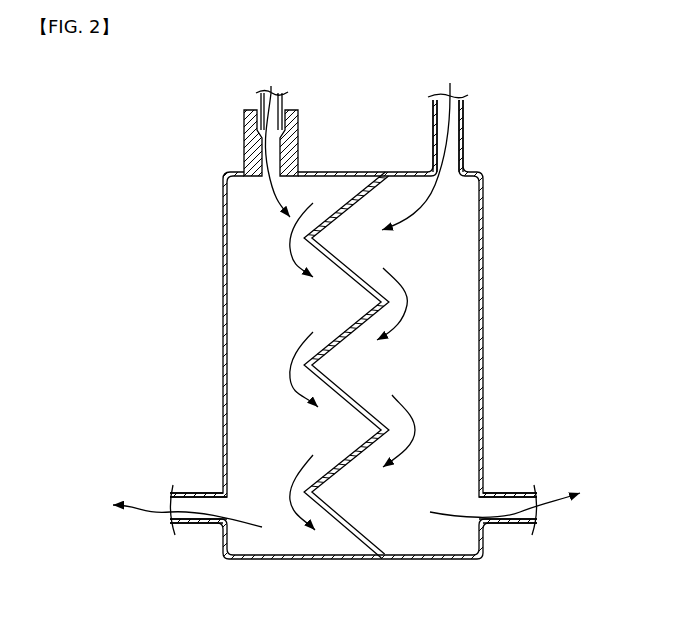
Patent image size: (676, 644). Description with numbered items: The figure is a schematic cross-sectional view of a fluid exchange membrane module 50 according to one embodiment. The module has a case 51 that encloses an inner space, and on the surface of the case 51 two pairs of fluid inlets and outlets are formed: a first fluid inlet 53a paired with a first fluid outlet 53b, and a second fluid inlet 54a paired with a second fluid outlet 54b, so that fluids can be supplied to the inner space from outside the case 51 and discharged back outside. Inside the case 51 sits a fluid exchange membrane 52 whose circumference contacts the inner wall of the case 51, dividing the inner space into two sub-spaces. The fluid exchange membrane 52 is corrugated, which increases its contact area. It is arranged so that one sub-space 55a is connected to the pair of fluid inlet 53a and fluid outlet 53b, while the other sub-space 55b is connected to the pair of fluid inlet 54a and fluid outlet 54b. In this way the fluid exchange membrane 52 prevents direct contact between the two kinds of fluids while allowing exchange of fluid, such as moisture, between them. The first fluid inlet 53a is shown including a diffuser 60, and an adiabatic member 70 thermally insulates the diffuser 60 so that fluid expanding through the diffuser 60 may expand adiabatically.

The fluid exchange membrane module 50 is at (82, 157).
The case 51 is at (487, 215).
The fluid exchange membrane 52 is at (343, 535).
The fluid inlet 53a is at (240, 143).
The fluid outlet 53b is at (206, 528).
The fluid inlet 54a is at (468, 142).
The fluid outlet 54b is at (507, 528).
The sub-space 55a is at (266, 311).
The sub-space 55b is at (450, 350).
The diffuser 60 is at (288, 152).
The adiabatic member 70 is at (297, 120).